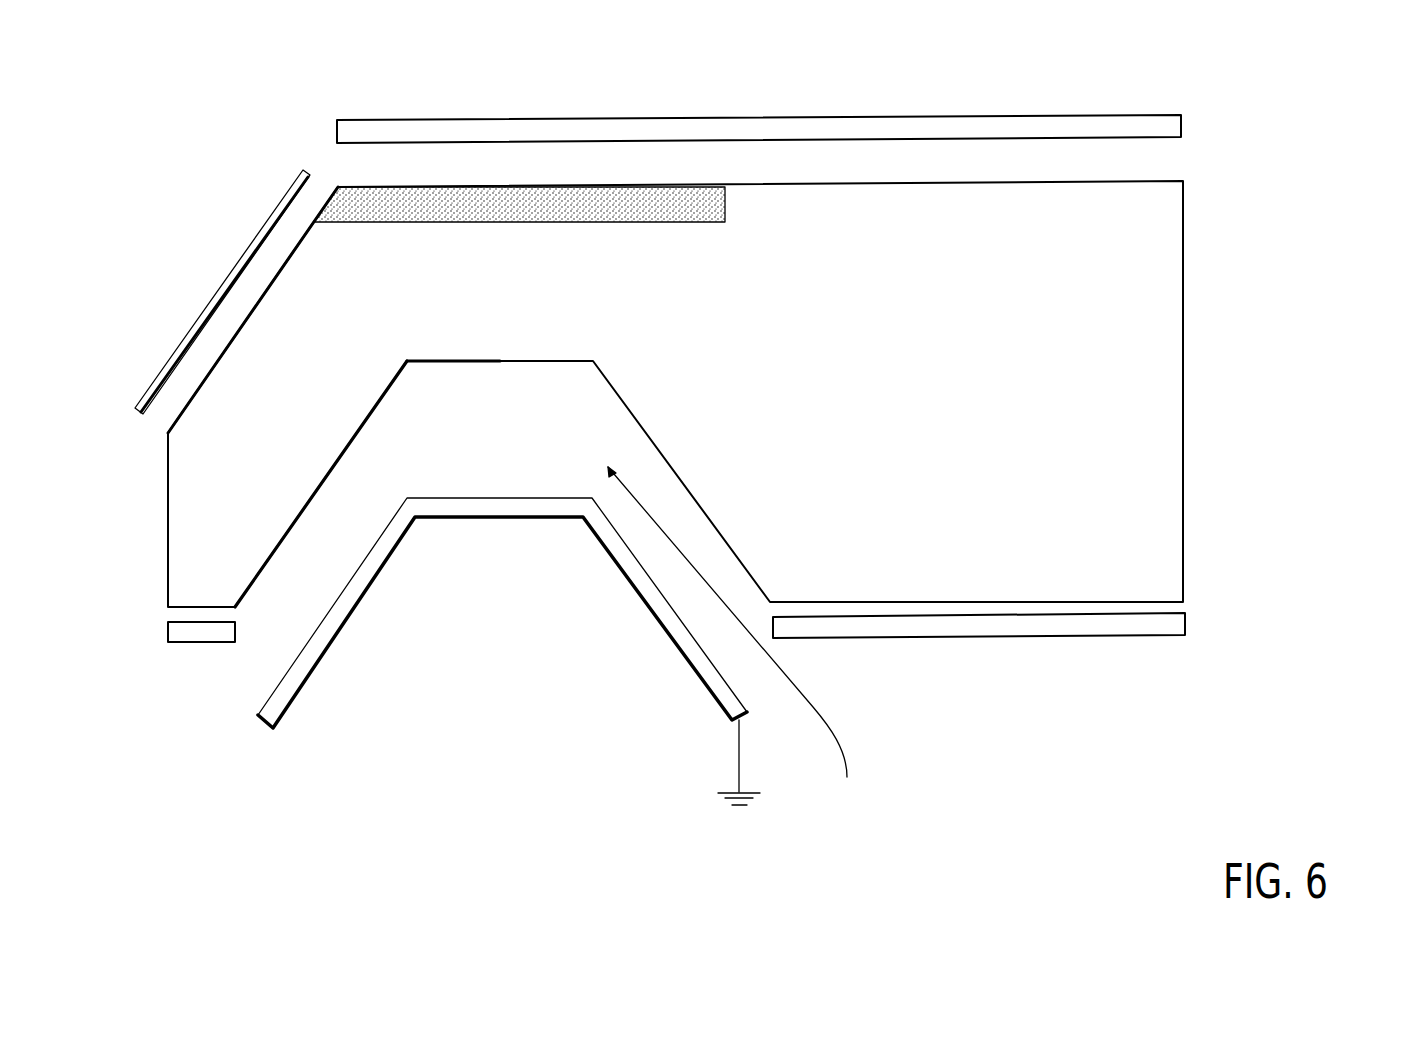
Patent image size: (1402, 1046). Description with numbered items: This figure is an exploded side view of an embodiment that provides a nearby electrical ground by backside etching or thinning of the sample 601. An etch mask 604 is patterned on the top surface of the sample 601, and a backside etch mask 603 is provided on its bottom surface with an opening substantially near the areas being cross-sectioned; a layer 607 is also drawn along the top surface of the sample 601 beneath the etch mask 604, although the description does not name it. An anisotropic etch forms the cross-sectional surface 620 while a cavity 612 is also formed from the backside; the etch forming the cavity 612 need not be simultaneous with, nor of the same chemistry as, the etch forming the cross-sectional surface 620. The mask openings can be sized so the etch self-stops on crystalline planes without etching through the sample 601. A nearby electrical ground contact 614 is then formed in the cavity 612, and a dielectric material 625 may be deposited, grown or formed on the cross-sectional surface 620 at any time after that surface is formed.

The sample 601 is at (966, 450).
The backside etch mask 603 is at (185, 645).
The etch mask 604 is at (690, 118).
The target material 607 is at (343, 188).
The cavity 612 is at (739, 640).
The nearby electrical ground contact 614 is at (327, 650).
The cross-sectional surface 620 is at (187, 408).
The dielectric material 625 is at (245, 250).